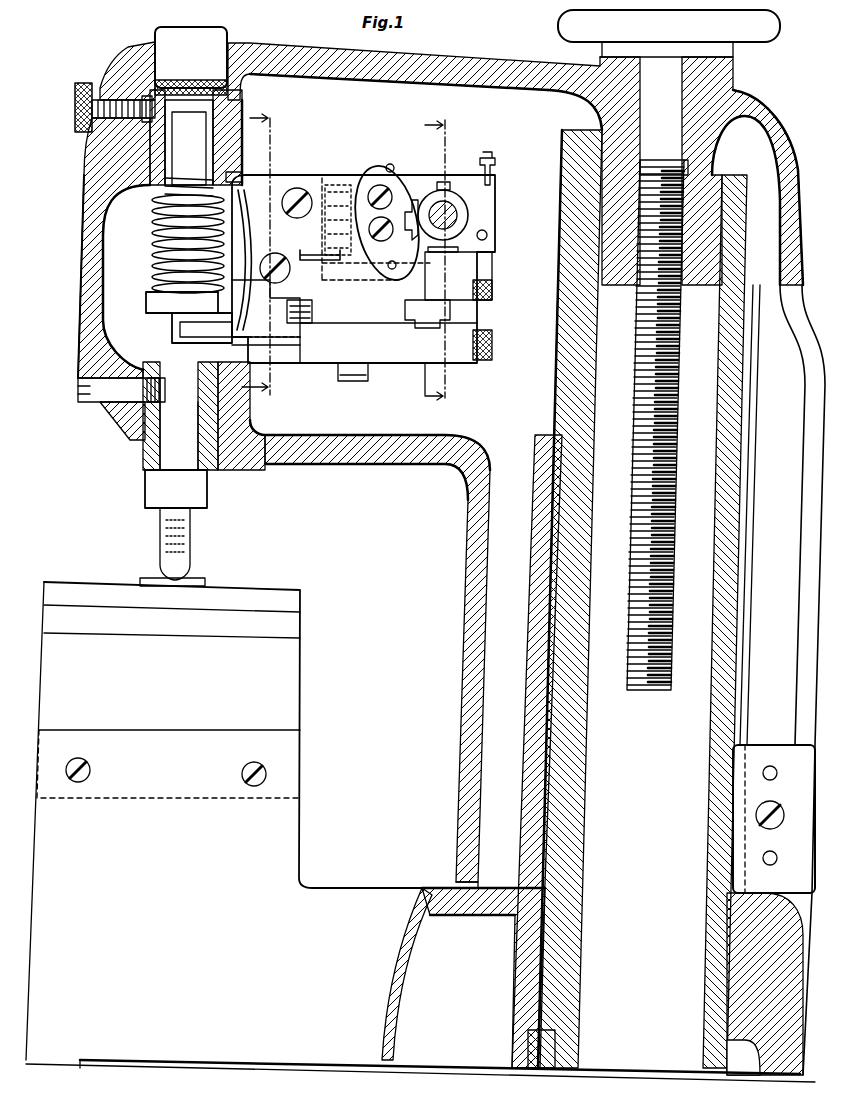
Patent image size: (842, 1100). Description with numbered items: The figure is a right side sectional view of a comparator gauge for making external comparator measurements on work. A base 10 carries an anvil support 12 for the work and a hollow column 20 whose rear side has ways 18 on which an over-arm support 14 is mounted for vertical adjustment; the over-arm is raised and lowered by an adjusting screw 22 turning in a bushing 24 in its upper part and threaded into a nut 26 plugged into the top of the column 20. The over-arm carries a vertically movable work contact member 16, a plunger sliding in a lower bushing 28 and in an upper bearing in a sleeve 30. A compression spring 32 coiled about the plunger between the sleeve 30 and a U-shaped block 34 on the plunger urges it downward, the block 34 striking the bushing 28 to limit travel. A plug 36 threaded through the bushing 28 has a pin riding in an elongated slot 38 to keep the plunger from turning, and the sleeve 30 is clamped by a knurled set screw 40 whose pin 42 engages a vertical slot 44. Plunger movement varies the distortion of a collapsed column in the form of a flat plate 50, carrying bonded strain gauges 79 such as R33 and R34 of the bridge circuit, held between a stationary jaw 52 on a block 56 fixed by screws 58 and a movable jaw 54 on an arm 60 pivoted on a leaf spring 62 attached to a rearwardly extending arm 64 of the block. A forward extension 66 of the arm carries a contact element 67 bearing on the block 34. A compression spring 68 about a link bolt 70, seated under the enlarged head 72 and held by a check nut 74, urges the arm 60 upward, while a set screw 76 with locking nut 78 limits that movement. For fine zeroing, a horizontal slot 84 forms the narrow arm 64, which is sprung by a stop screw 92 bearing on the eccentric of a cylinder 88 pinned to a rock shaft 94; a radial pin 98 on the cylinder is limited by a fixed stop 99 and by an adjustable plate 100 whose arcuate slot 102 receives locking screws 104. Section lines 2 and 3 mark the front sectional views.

The base 10 is at (224, 821).
The anvil support 12 is at (293, 592).
The over-arm support 14 is at (482, 70).
The work contact member 16 is at (190, 555).
The ways 18 is at (740, 740).
The column 20 is at (715, 728).
The adjusting screw 22 is at (640, 690).
The bushing 24 is at (705, 88).
The nut 26 is at (700, 185).
The bushing 28 is at (145, 478).
The sleeve 30 is at (191, 61).
The compression spring 32 is at (152, 228).
The U-shaped block 34 is at (150, 298).
The plug 36 is at (103, 408).
The elongated slot 38 is at (145, 400).
The set screw 40 is at (80, 83).
The pin 42 is at (150, 100).
The vertical slot 44 is at (140, 115).
The flat plate 50 is at (242, 185).
The stationary jaw 52 is at (245, 172).
The movable jaw 54 is at (245, 320).
The block 56 is at (300, 180).
The screws 58 is at (290, 215).
The arm 60 is at (450, 365).
The leaf spring 62 is at (494, 322).
The rearwardly extending arm 64 is at (494, 292).
The forward extension 66 is at (180, 329).
The contact element 67 is at (172, 316).
The compression spring 68 is at (318, 257).
The link bolt 70 is at (346, 315).
The enlarged head 72 is at (335, 182).
The check nut 74 is at (356, 380).
The set screw 76 is at (290, 312).
The locking nut 78 is at (270, 325).
The bonded electrical strain sensitive gauges 79 is at (189, 148).
The horizontal slot 84 is at (495, 262).
The cylinder 88 is at (458, 215).
The stop screw 92 is at (428, 327).
The rock shaft 94 is at (466, 208).
The radially extending pin 98 is at (440, 180).
The fixed stop 99 is at (488, 236).
The adjustable plate 100 is at (372, 170).
The arcuate slot 102 is at (390, 164).
The locking screws 104 is at (400, 178).
The section line 2— 2 is at (257, 255).
The section line 3— 3 is at (437, 260).
The electrical strain sensitive gauge R33 is at (215, 416).
The electrical strain sensitive gauge R34 is at (258, 342).